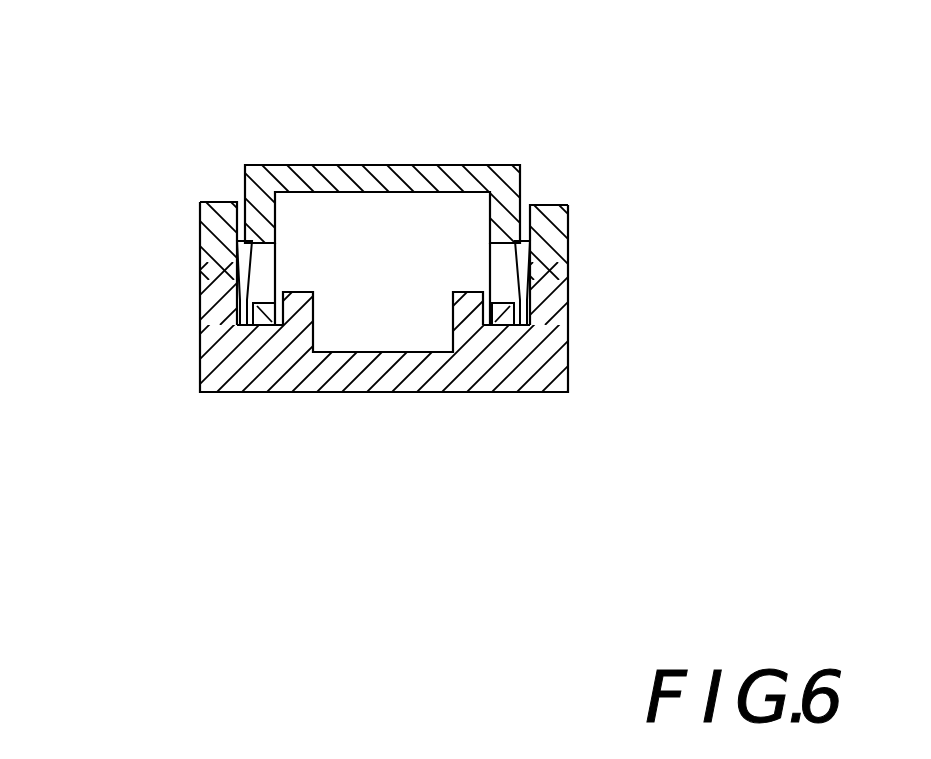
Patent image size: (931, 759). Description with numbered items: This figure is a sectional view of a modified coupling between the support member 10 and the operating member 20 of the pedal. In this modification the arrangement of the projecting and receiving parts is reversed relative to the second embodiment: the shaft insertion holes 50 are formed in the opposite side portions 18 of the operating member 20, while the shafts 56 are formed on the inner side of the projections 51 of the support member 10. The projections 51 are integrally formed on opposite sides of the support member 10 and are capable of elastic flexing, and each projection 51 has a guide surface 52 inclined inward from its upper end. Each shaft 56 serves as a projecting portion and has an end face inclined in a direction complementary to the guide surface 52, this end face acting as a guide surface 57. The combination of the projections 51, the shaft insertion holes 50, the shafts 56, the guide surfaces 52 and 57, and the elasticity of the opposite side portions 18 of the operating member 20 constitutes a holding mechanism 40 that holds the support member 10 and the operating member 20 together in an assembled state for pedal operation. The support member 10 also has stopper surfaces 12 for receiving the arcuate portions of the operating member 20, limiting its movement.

The support member 10 is at (386, 393).
The stopper surfaces 12 is at (263, 328).
The opposite side portions 18 is at (284, 313).
The operating member 20 is at (393, 163).
The holding mechanism 40 is at (224, 262).
The shaft insertion holes 50 is at (258, 290).
The projections 51 is at (218, 207).
The guide surface 52 is at (250, 314).
The shafts 56 is at (240, 266).
The guide surface 57 is at (253, 265).